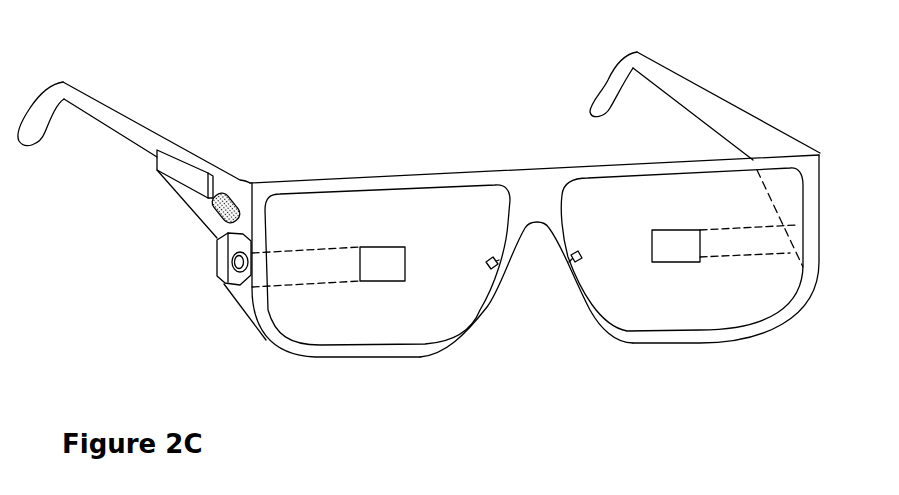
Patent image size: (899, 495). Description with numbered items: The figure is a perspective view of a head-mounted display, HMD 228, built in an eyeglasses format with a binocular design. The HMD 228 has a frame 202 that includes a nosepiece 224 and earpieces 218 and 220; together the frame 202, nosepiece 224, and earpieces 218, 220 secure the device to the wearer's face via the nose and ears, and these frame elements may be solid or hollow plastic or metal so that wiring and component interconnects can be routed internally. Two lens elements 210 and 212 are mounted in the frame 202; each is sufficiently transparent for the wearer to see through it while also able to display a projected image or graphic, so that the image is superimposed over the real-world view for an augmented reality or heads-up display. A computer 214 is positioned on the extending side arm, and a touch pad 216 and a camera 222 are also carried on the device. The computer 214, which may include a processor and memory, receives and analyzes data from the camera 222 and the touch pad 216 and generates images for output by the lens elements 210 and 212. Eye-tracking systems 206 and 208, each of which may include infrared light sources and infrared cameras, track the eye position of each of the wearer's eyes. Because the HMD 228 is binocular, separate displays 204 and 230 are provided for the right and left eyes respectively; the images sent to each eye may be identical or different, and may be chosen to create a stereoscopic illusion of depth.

The frame 202 is at (428, 174).
The display 204 is at (361, 282).
The eye-tracking system 206 is at (496, 263).
The eye-tracking system 208 is at (577, 260).
The lens element 210 is at (338, 190).
The lens element 212 is at (642, 176).
The computer 214 is at (195, 164).
The touch pad 216 is at (227, 194).
The earpiece 218 is at (116, 108).
The earpiece 220 is at (705, 88).
The camera 222 is at (220, 276).
The nosepiece 224 is at (556, 247).
The HMD 228 is at (200, 61).
The display 230 is at (685, 264).